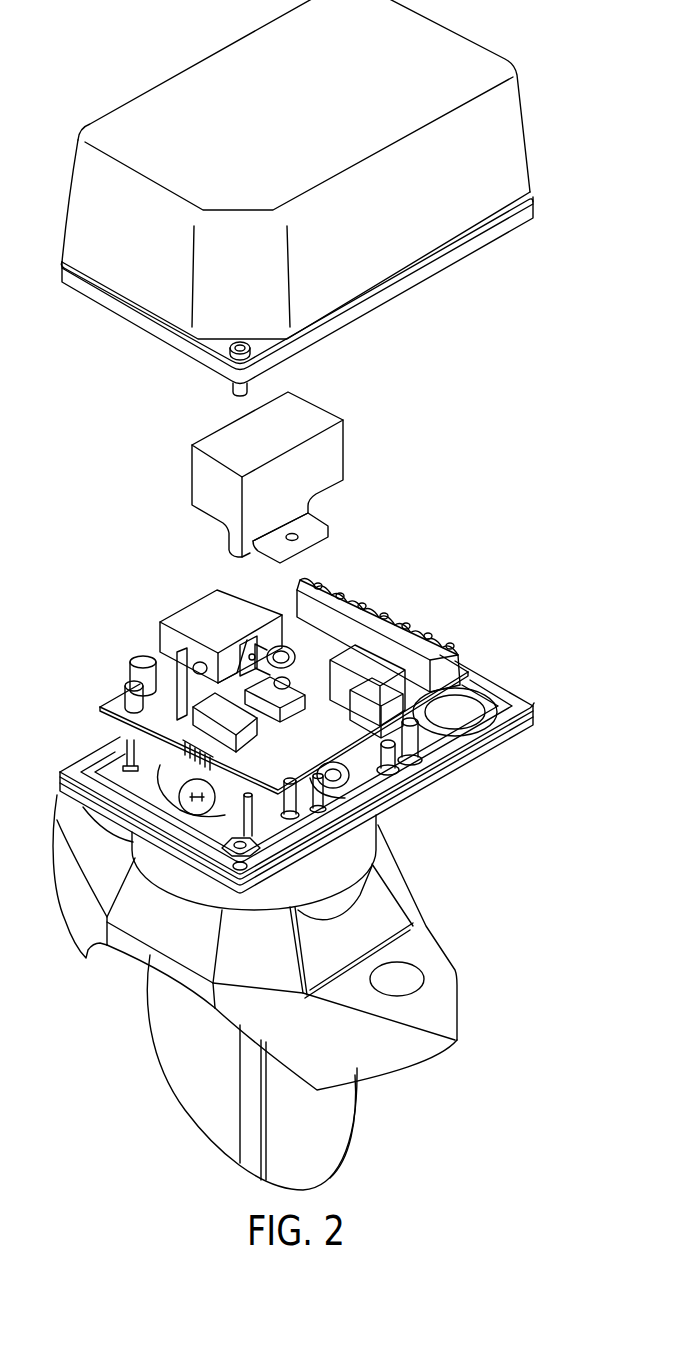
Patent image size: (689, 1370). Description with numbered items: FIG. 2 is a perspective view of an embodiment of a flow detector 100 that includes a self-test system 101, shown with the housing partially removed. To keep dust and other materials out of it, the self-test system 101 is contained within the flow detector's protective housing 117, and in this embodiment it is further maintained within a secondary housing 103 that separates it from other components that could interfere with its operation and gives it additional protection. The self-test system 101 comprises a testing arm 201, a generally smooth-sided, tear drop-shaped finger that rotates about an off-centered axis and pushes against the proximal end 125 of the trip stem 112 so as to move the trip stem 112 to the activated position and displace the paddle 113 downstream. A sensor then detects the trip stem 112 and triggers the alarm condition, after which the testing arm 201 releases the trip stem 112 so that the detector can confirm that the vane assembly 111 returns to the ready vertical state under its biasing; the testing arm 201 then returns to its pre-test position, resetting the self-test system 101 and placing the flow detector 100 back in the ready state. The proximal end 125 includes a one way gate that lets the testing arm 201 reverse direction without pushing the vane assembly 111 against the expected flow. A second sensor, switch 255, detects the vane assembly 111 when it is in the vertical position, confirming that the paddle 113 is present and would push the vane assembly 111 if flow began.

The flow detector 100 is at (445, 580).
The self-test system 101 is at (253, 597).
The secondary housing 103 is at (332, 462).
The vane assembly 111 is at (255, 1168).
The trip stem 112 is at (283, 735).
The paddle 113 is at (337, 1152).
The protective housing 117 is at (515, 160).
The proximal end 125 is at (337, 723).
The testing arm 201 is at (291, 668).
The switch 255 is at (396, 760).